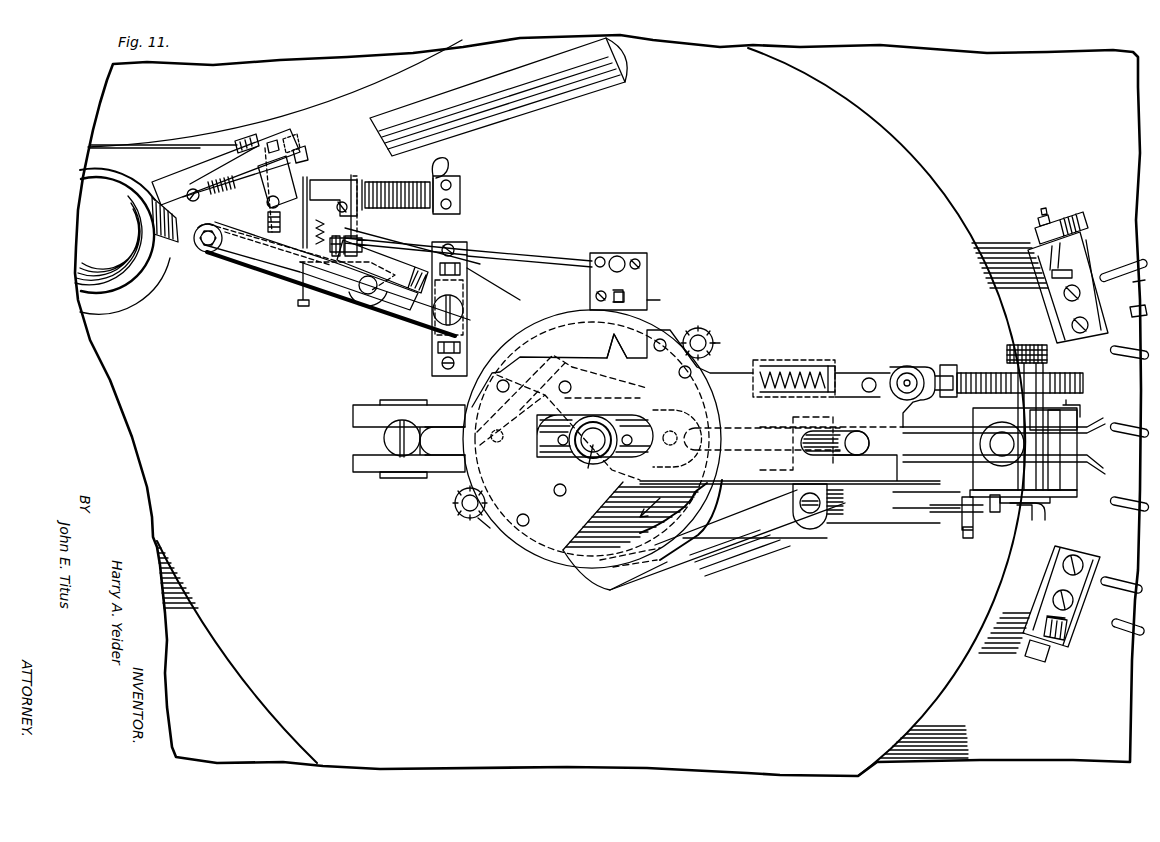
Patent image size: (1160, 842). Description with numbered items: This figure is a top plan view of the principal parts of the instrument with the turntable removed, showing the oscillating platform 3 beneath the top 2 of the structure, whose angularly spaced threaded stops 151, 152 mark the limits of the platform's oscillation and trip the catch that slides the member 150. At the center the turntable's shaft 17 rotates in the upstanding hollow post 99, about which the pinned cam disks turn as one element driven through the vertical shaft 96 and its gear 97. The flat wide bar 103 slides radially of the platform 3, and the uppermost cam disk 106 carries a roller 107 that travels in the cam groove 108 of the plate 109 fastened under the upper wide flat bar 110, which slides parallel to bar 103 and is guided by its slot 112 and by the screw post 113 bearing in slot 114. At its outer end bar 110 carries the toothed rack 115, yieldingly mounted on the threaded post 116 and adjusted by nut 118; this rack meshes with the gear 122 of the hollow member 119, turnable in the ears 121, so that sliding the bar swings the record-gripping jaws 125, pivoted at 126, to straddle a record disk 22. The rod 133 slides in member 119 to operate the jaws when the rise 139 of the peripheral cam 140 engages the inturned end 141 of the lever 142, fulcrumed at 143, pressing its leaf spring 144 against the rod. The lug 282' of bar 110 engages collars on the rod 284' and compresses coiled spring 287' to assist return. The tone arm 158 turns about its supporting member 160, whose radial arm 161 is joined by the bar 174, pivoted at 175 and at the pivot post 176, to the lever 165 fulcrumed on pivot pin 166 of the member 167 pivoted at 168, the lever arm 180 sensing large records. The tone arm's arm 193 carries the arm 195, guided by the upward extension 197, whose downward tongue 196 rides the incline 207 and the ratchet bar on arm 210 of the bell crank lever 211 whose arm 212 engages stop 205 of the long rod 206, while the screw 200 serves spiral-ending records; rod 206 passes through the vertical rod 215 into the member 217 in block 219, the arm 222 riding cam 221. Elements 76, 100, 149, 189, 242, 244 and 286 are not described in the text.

The top of the structure 2 is at (608, 405).
The platform 3 is at (602, 412).
The turntable's shaft 17 is at (579, 463).
The record disk 22 is at (1122, 622).
The edge member 76 is at (1142, 289).
The vertical shaft 96 is at (704, 331).
The gear 97 is at (726, 342).
The upstanding hollow post 99 is at (597, 455).
The hub 100 is at (580, 447).
The flat wide bar 103 is at (762, 462).
The uppermost cam disk 106 is at (636, 518).
The roller 107 is at (498, 436).
The cam groove 108 is at (636, 372).
The plate 109 is at (612, 352).
The upper wide flat bar 110 is at (608, 439).
The slot 112 is at (848, 428).
The screw post 113 is at (386, 438).
The slot 114 is at (409, 439).
The toothed rack 115 is at (1084, 384).
The threaded post 116 is at (912, 364).
The nut 118 is at (902, 372).
The hollow member 119 is at (1005, 370).
The ears 121 is at (1070, 410).
The gear 122 is at (1044, 378).
The record-gripping jaws 125 is at (1011, 429).
The pivot 126 is at (1006, 472).
The rod 133 is at (1038, 512).
The rise 139 is at (687, 520).
The peripheral cam 140 is at (664, 503).
The inturned end 141 is at (590, 565).
The lever 142 is at (727, 540).
The fulcrum 143 is at (812, 512).
The leaf spring 144 is at (958, 512).
The plate 149 is at (1045, 492).
The member 150 is at (1078, 446).
The threaded stop 151 is at (1070, 270).
The threaded stop 152 is at (1063, 620).
The tone arm 158 is at (153, 192).
The supporting member 160 is at (115, 231).
The radial arm 161 is at (191, 249).
The lever 165 is at (466, 309).
The vertical pivot pin 166 is at (446, 318).
The member 167 is at (482, 283).
The pivot 168 is at (462, 276).
The bar 174 is at (350, 292).
The pivot 175 is at (380, 290).
The pivot post 176 is at (212, 258).
The lever arm 180 is at (398, 272).
The pivot 189 is at (267, 243).
The arm 193 is at (202, 173).
The arm 195 is at (305, 155).
The downward tongue 196 is at (292, 137).
The upward extension 197 is at (273, 142).
The screw 200 is at (298, 302).
The stop 205 is at (406, 240).
The long rod 206 is at (536, 262).
The incline 207 is at (386, 186).
The arm 210 is at (322, 202).
The bell crank lever 211 is at (347, 229).
The arm 212 is at (344, 246).
The vertical rod 215 is at (600, 258).
The member 217 is at (622, 258).
The block 219 is at (618, 280).
The cam 221 is at (666, 566).
The arm 222 is at (640, 302).
The gear 242 is at (460, 512).
The gear 244 is at (490, 528).
The lug 282' is at (877, 358).
The rod 284' is at (794, 368).
The stop 286 is at (830, 360).
The coiled spring 287' is at (794, 358).